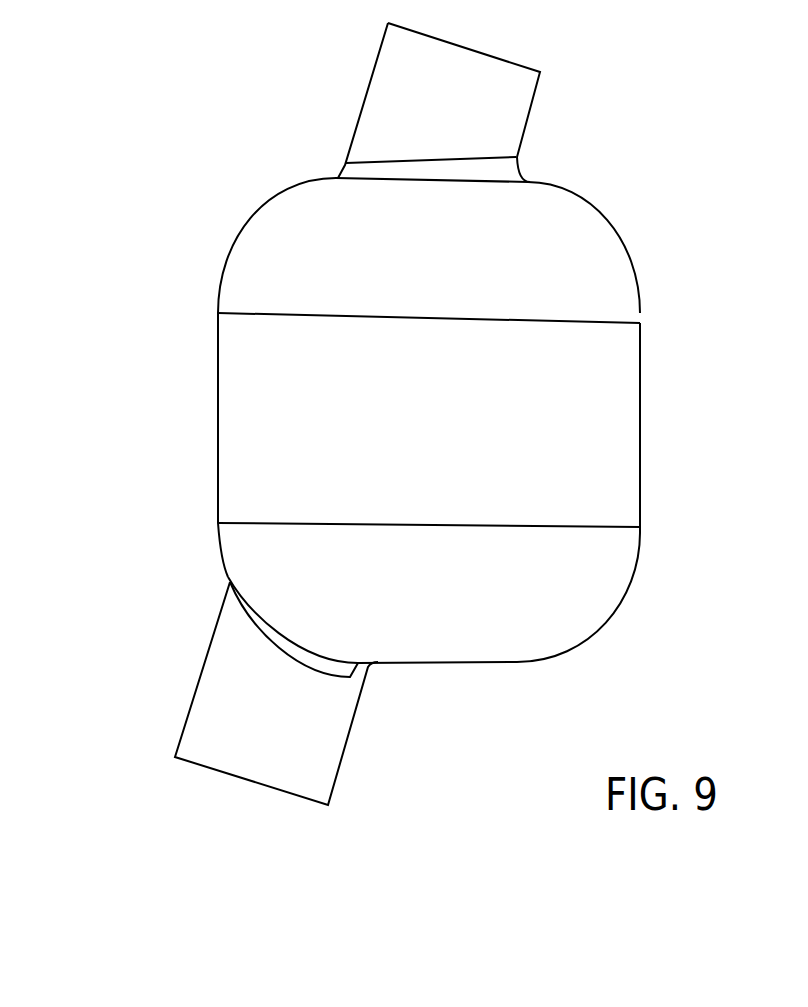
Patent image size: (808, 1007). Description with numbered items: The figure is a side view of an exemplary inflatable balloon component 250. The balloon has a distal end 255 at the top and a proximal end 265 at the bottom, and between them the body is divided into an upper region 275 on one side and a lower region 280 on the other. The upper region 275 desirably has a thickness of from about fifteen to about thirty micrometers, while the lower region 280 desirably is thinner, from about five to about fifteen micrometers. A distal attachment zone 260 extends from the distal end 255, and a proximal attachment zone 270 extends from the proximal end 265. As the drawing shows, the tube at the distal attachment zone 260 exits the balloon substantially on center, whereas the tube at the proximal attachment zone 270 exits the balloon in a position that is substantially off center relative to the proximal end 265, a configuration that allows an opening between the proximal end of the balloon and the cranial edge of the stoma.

The inflatable balloon component 250 is at (464, 414).
The distal end 255 is at (482, 234).
The distal attachment zone 260 is at (522, 121).
The proximal end 265 is at (472, 642).
The proximal attachment zone 270 is at (345, 717).
The upper region 275 is at (238, 398).
The lower region 280 is at (636, 416).